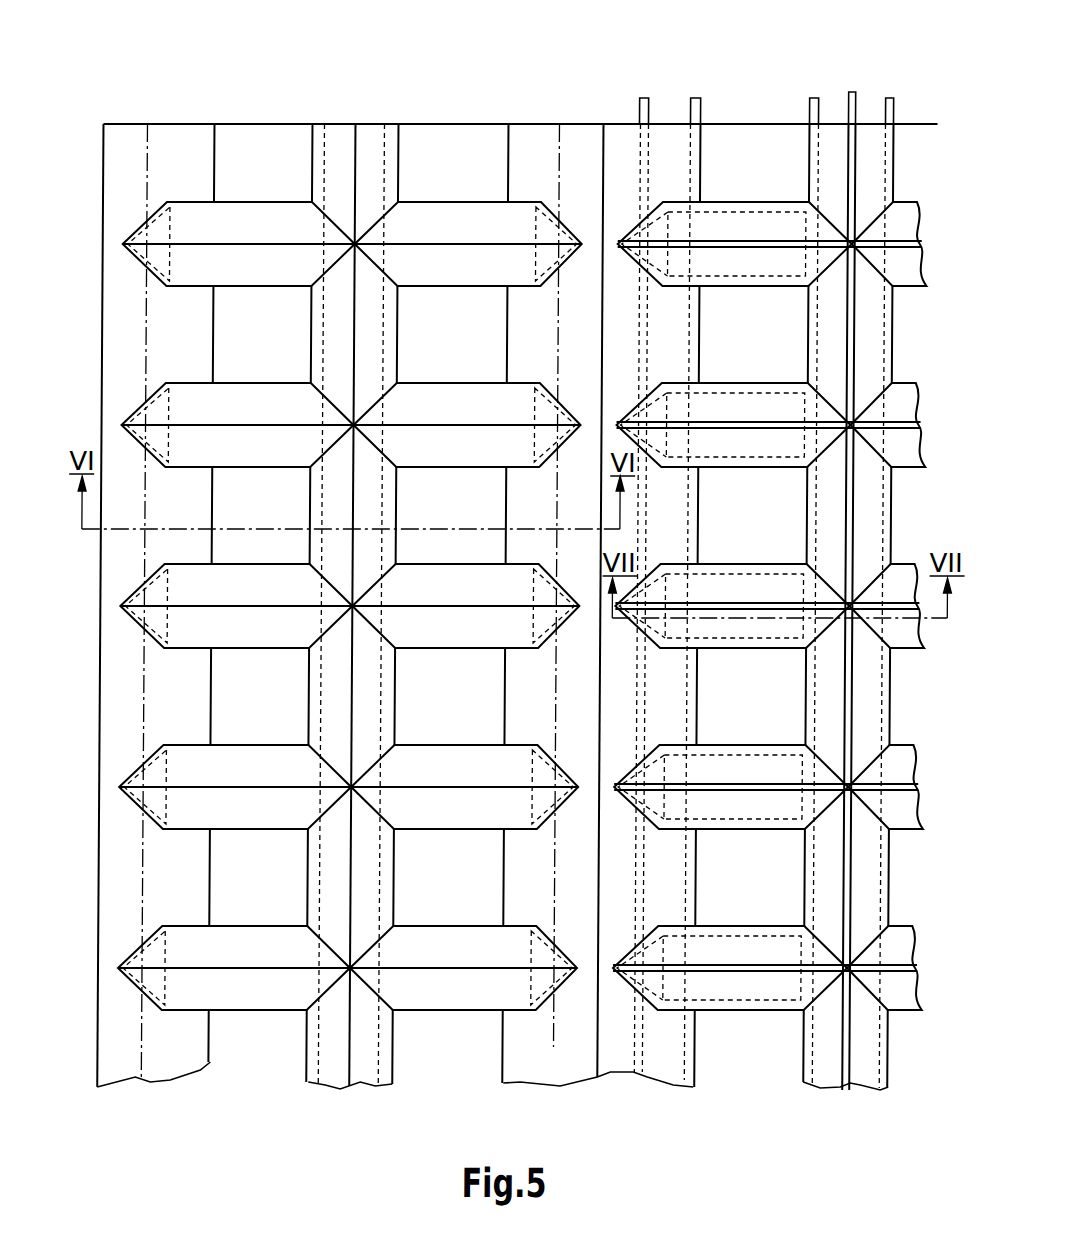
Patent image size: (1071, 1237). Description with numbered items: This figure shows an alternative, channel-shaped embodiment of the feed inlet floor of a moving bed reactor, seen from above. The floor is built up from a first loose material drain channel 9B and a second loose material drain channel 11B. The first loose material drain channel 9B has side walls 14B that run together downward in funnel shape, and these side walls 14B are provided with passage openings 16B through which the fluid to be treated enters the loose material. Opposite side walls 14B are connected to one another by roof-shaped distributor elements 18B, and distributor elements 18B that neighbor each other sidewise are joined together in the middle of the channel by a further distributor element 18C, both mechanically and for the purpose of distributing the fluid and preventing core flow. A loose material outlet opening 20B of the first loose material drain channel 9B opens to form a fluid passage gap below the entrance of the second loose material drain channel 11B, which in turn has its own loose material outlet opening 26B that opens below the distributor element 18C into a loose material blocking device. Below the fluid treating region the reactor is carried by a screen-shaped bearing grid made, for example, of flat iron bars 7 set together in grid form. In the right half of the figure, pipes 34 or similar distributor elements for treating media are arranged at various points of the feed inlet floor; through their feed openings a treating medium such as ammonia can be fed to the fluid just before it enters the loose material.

The flat iron bars 7 is at (778, 88).
The first loose material drain channel 9B is at (534, 102).
The second loose material drain channel 11B is at (431, 102).
The side walls 14B is at (203, 187).
The passage openings 16B is at (553, 983).
The roof-shaped distributor elements 18B is at (451, 818).
The distributor element 18C is at (336, 540).
The loose material outlet opening 20B is at (505, 1053).
The loose material outlet opening 26B is at (385, 1057).
The pipes 34 is at (717, 212).